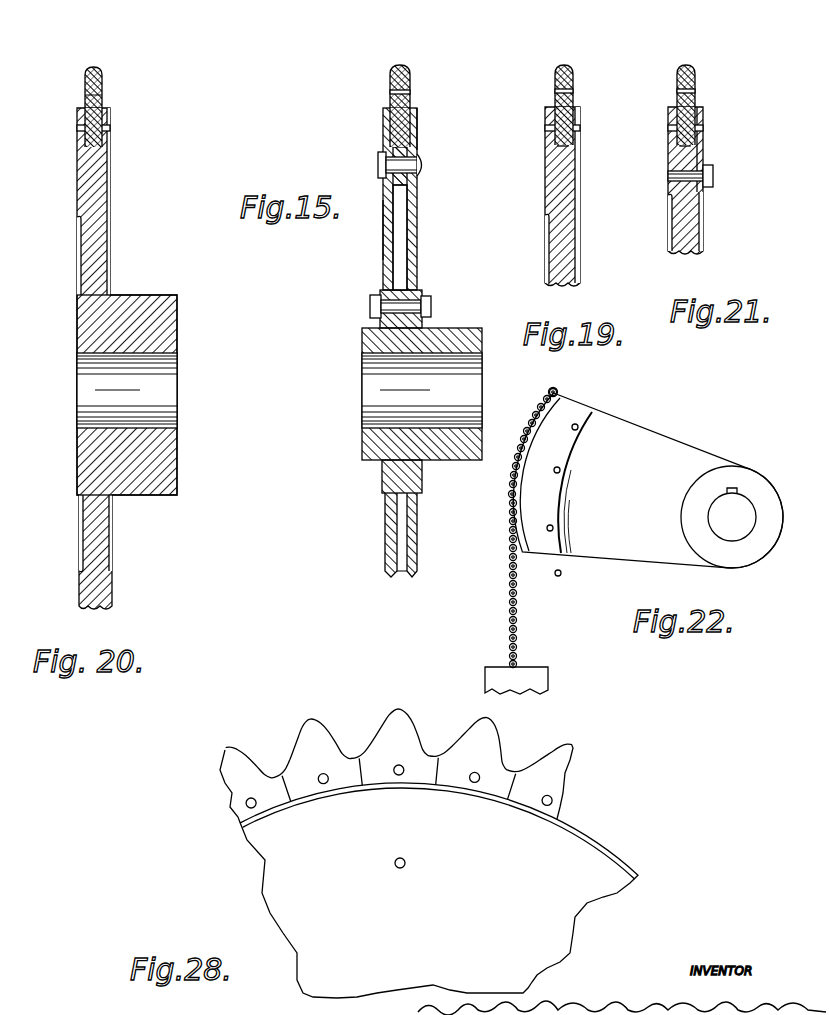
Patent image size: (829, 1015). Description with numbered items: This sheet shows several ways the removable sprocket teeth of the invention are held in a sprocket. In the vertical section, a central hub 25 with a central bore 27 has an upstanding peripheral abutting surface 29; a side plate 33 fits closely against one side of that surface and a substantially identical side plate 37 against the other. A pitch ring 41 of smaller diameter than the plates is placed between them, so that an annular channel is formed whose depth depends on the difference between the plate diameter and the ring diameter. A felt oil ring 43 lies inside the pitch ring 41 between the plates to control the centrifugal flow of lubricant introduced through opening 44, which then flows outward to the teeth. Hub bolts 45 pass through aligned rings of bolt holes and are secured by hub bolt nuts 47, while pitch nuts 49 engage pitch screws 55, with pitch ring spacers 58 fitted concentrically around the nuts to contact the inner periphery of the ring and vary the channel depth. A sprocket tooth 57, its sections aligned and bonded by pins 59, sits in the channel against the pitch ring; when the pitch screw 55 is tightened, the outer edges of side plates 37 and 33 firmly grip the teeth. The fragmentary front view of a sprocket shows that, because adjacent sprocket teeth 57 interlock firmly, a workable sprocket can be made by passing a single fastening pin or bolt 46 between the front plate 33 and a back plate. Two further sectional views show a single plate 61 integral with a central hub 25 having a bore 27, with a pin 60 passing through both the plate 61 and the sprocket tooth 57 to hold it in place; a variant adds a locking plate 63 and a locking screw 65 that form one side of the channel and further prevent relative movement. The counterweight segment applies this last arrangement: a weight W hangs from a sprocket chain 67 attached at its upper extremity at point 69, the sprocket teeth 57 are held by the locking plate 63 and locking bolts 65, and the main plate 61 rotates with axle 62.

In FIG. 20, the central hub 25 is at (157, 332).
In FIG. 15, the central hub 25 is at (370, 338).
In FIG. 20, the central bore 27 is at (158, 396).
In FIG. 15, the central bore 27 is at (372, 392).
In FIG. 15, the peripheral abutting surface 29 is at (402, 288).
In FIG. 15, the side plate 33 is at (390, 220).
In FIG. 28, the side plate 33 is at (570, 865).
In FIG. 15, the side plate 37 is at (415, 207).
In FIG. 15, the pitch ring 41 is at (385, 145).
In FIG. 15, the felt oil ring 43 is at (388, 195).
In FIG. 15, the opening 44 is at (387, 272).
In FIG. 15, the hub bolt 45 is at (370, 307).
In FIG. 28, the fastening pin or bolt 46 is at (401, 869).
In FIG. 15, the hub bolt nut 47 is at (427, 298).
In FIG. 15, the pitch nut 49 is at (378, 166).
In FIG. 15, the pitch screw 55 is at (424, 163).
In FIG. 20, the sprocket tooth 57 is at (103, 63).
In FIG. 15, the sprocket tooth 57 is at (414, 63).
In FIG. 19, the sprocket tooth 57 is at (577, 58).
In FIG. 21, the sprocket tooth 57 is at (699, 63).
In FIG. 28, the sprocket tooth 57 is at (400, 715).
In FIG. 15, the pitch ring spacer 58 is at (416, 145).
In FIG. 20, the pin 59 is at (102, 92).
In FIG. 15, the pin 59 is at (413, 107).
In FIG. 19, the pin 59 is at (555, 90).
In FIG. 21, the pin 59 is at (694, 91).
In FIG. 28, the pin 59 is at (320, 784).
In FIG. 20, the pin 60 is at (78, 130).
In FIG. 19, the pin 60 is at (548, 127).
In FIG. 21, the pin 60 is at (670, 125).
In FIG. 20, the plate 61 is at (88, 232).
In FIG. 19, the plate 61 is at (567, 197).
In FIG. 21, the plate 61 is at (695, 242).
In FIG. 22, the plate 61 is at (670, 445).
In FIG. 22, the axle 62 is at (742, 525).
In FIG. 21, the locking plate 63 is at (703, 148).
In FIG. 22, the locking plate 63 is at (560, 450).
In FIG. 21, the locking screw 65 is at (714, 175).
In FIG. 22, the locking screw 65 is at (578, 425).
In FIG. 22, the sprocket chain 67 is at (511, 620).
In FIG. 22, the attachment point 69 is at (551, 390).
In FIG. 22, the weight W is at (535, 675).